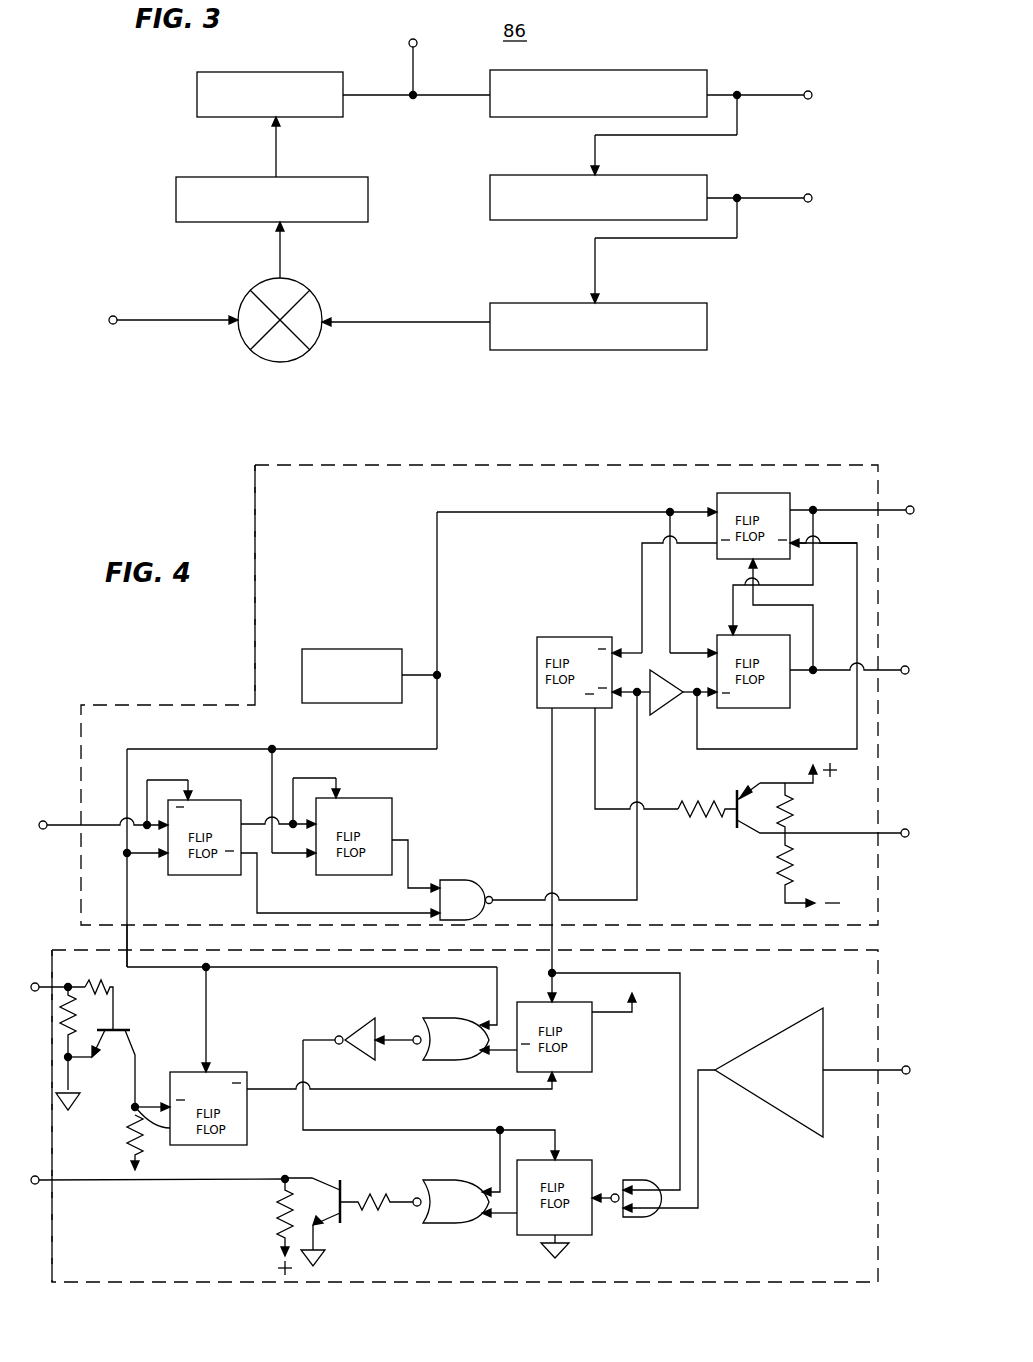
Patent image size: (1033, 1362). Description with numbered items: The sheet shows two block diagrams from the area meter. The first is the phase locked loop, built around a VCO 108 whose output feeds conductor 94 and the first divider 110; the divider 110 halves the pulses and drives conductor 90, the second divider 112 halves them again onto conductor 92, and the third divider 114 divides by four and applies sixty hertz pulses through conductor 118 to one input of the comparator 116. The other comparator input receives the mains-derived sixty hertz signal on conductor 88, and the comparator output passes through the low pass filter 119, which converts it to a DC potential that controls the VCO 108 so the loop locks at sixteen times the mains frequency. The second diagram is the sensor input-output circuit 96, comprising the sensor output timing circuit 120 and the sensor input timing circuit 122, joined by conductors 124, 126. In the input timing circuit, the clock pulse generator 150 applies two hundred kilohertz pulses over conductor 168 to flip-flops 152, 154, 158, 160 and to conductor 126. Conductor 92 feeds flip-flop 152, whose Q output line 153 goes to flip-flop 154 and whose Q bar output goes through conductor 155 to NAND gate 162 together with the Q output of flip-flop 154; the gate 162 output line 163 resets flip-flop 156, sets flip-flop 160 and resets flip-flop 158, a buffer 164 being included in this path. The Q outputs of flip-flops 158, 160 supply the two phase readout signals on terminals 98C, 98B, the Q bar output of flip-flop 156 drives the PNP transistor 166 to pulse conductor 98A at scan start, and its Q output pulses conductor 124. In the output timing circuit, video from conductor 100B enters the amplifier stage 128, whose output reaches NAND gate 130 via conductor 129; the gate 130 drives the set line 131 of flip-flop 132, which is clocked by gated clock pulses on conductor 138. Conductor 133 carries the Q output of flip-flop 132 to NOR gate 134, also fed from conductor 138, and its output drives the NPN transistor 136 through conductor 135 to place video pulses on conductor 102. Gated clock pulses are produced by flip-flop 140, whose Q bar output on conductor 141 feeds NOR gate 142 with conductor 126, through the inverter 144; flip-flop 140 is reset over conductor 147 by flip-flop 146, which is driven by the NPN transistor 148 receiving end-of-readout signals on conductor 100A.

In FIG. 3, the conductor 88 is at (168, 320).
In FIG. 3, the conductor 90 is at (770, 94).
In FIG. 3, the conductor 92 is at (770, 198).
In FIG. 4, the conductor 92 is at (62, 821).
In FIG. 3, the conductor 94 is at (417, 72).
In FIG. 4, the sensor input-output circuit 96 is at (221, 637).
In FIG. 4, the conductor 98A is at (897, 830).
In FIG. 4, the conductor 98B is at (897, 668).
In FIG. 4, the conductor 98C is at (897, 508).
In FIG. 4, the conductor 100A is at (40, 986).
In FIG. 4, the conductor 100B is at (844, 1070).
In FIG. 4, the conductor 102 is at (216, 1182).
In FIG. 3, the VCO 108 is at (310, 81).
In FIG. 3, the first divider 110 is at (651, 78).
In FIG. 3, the second divider 112 is at (660, 182).
In FIG. 3, the third divider 114 is at (667, 312).
In FIG. 3, the comparator 116 is at (282, 350).
In FIG. 3, the conductor 118 is at (390, 322).
In FIG. 3, the low pass filter 119 is at (318, 211).
In FIG. 4, the sensor output timing circuit 120 is at (850, 1238).
In FIG. 4, the sensor input timing circuit 122 is at (272, 645).
In FIG. 4, the conductor 124 is at (552, 932).
In FIG. 4, the conductor 126 is at (128, 935).
In FIG. 4, the amplifier stage 128 is at (768, 1048).
In FIG. 4, the conductor 129 is at (699, 1160).
In FIG. 4, the NAND gate 130 is at (630, 1184).
In FIG. 4, the set line 131 is at (608, 1204).
In FIG. 4, the flip-flop 132 is at (575, 1170).
In FIG. 4, the conductor 133 is at (503, 1214).
In FIG. 4, the NOR gate 134 is at (450, 1186).
In FIG. 4, the conductor 135 is at (396, 1198).
In FIG. 4, the NPN transistor 136 is at (348, 1176).
In FIG. 4, the conductor 138 is at (365, 1130).
In FIG. 4, the flip-flop 140 is at (596, 1036).
In FIG. 4, the conductor 141 is at (505, 1052).
In FIG. 4, the NOR gate 142 is at (456, 1026).
In FIG. 4, the inverter 144 is at (360, 1020).
In FIG. 4, the second flip-flop 146 is at (222, 1074).
In FIG. 4, the conductor 147 is at (256, 1091).
In FIG. 4, the NPN transistor 148 is at (123, 1023).
In FIG. 4, the clock pulse generator 150 is at (366, 655).
In FIG. 4, the flip-flop 152 is at (212, 808).
In FIG. 4, the Q output line 153 is at (260, 818).
In FIG. 4, the flip-flop 154 is at (356, 805).
In FIG. 4, the conductor 155 is at (258, 878).
In FIG. 4, the flip-flop 156 is at (570, 642).
In FIG. 4, the flip-flop 158 is at (752, 498).
In FIG. 4, the flip-flop 160 is at (752, 641).
In FIG. 4, the NAND gate 162 is at (468, 888).
In FIG. 4, the reset line 163 is at (579, 897).
In FIG. 4, the buffer 164 is at (654, 706).
In FIG. 4, the transistor 166 is at (754, 766).
In FIG. 4, the conductor 168 is at (437, 698).